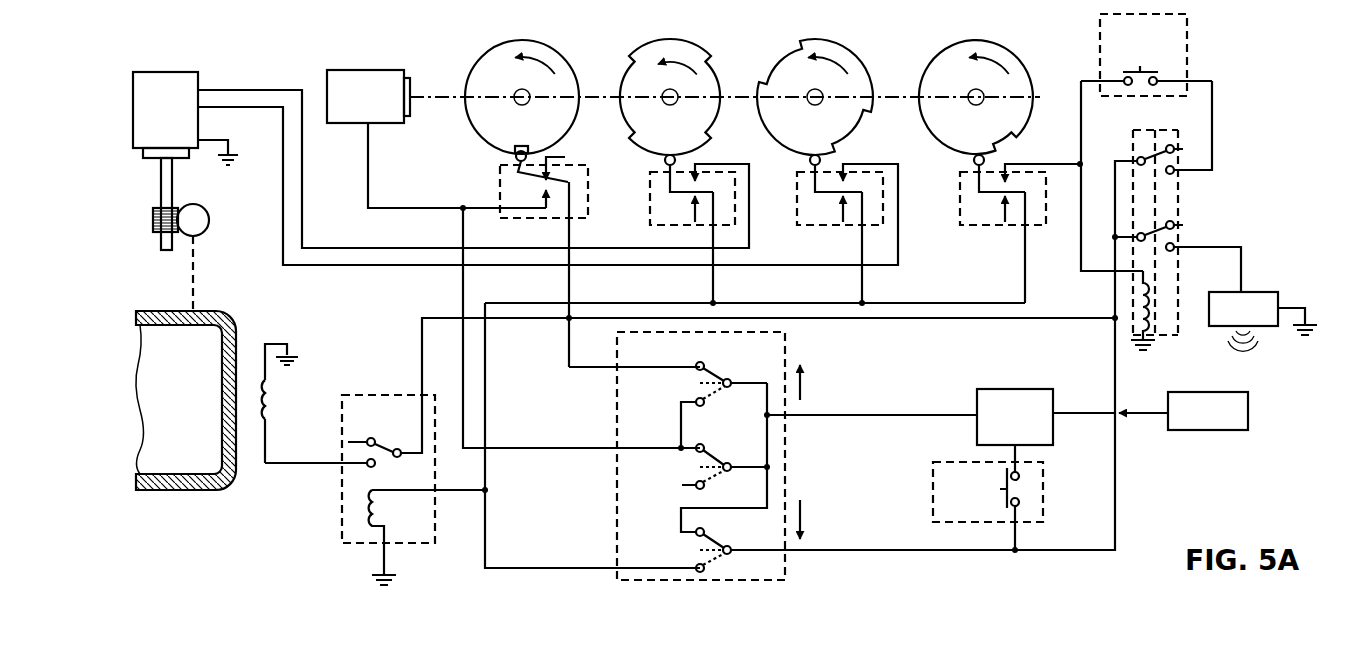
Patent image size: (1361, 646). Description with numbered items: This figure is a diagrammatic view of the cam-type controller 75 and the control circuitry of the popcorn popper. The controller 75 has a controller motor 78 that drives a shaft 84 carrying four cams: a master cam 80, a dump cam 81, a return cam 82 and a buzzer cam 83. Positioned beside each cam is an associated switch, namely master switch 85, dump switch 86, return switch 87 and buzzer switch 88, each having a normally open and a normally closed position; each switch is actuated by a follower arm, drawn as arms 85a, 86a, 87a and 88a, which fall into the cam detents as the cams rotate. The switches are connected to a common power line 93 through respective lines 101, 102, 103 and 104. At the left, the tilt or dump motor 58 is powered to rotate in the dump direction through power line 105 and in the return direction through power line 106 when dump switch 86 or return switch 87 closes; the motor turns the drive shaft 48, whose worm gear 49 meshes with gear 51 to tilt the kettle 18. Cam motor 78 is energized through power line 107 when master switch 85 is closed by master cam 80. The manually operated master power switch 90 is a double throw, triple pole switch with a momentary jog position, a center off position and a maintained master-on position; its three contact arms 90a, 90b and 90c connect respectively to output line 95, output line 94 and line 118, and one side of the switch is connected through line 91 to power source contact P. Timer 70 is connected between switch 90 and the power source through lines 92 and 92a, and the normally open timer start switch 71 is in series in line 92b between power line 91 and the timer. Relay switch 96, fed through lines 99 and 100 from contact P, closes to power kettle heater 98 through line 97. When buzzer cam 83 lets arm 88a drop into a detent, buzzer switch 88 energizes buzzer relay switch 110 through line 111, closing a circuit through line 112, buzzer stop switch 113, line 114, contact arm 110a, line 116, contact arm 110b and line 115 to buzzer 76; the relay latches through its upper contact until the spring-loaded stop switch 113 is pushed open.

The kettle 18 is at (230, 305).
The drive shaft 48 is at (172, 182).
The worm gear 49 is at (156, 218).
The gear 51 is at (209, 220).
The tilt motor 58 is at (192, 72).
The timer 70 is at (1003, 388).
The timer start switch 71 is at (931, 478).
The controller 75 is at (410, 50).
The buzzer 76 is at (1271, 291).
The controller motor 78 is at (337, 70).
The master cam 80 is at (557, 77).
The dump cam 81 is at (651, 54).
The return cam 82 is at (846, 56).
The buzzer cam 83 is at (941, 61).
The shaft 84 is at (437, 92).
The master switch 85 is at (500, 193).
The master cam follower 85a is at (515, 158).
The dump switch 86 is at (650, 200).
The dump cam follower 86a is at (663, 161).
The return switch 87 is at (797, 215).
The return cam follower 87a is at (810, 161).
The buzzer switch 88 is at (962, 215).
The arm 88a is at (972, 162).
The master power switch 90 is at (787, 346).
The contact arm 90a is at (694, 379).
The contact arm 90b is at (694, 462).
The contact arm 90c is at (694, 549).
The line 91 is at (873, 549).
The line 92 is at (890, 412).
The line 92a is at (1083, 410).
The line 92b is at (1020, 457).
The common power output line 93 is at (780, 300).
The output line 94 is at (463, 291).
The output line 95 is at (605, 372).
The relay switch 96 is at (338, 497).
The line 97 is at (300, 466).
The kettle heater 98 is at (323, 339).
The line 99 is at (422, 361).
The line 100 is at (1112, 296).
The line 101 is at (571, 283).
The line 102 is at (713, 287).
The line 103 is at (862, 247).
The line 104 is at (1025, 240).
The power line 105 is at (280, 88).
The power line 106 is at (289, 268).
The power line 107 is at (420, 212).
The buzzer relay switch 110 is at (1184, 128).
The contact arm 110a is at (1150, 153).
The contact arm 110b is at (1182, 205).
The line 111 is at (1080, 233).
The line 112 is at (1082, 125).
The buzzer stop switch 113 is at (1193, 45).
The line 114 is at (1213, 83).
The line 115 is at (1225, 247).
The line 116 is at (1115, 192).
The line 118 is at (680, 506).